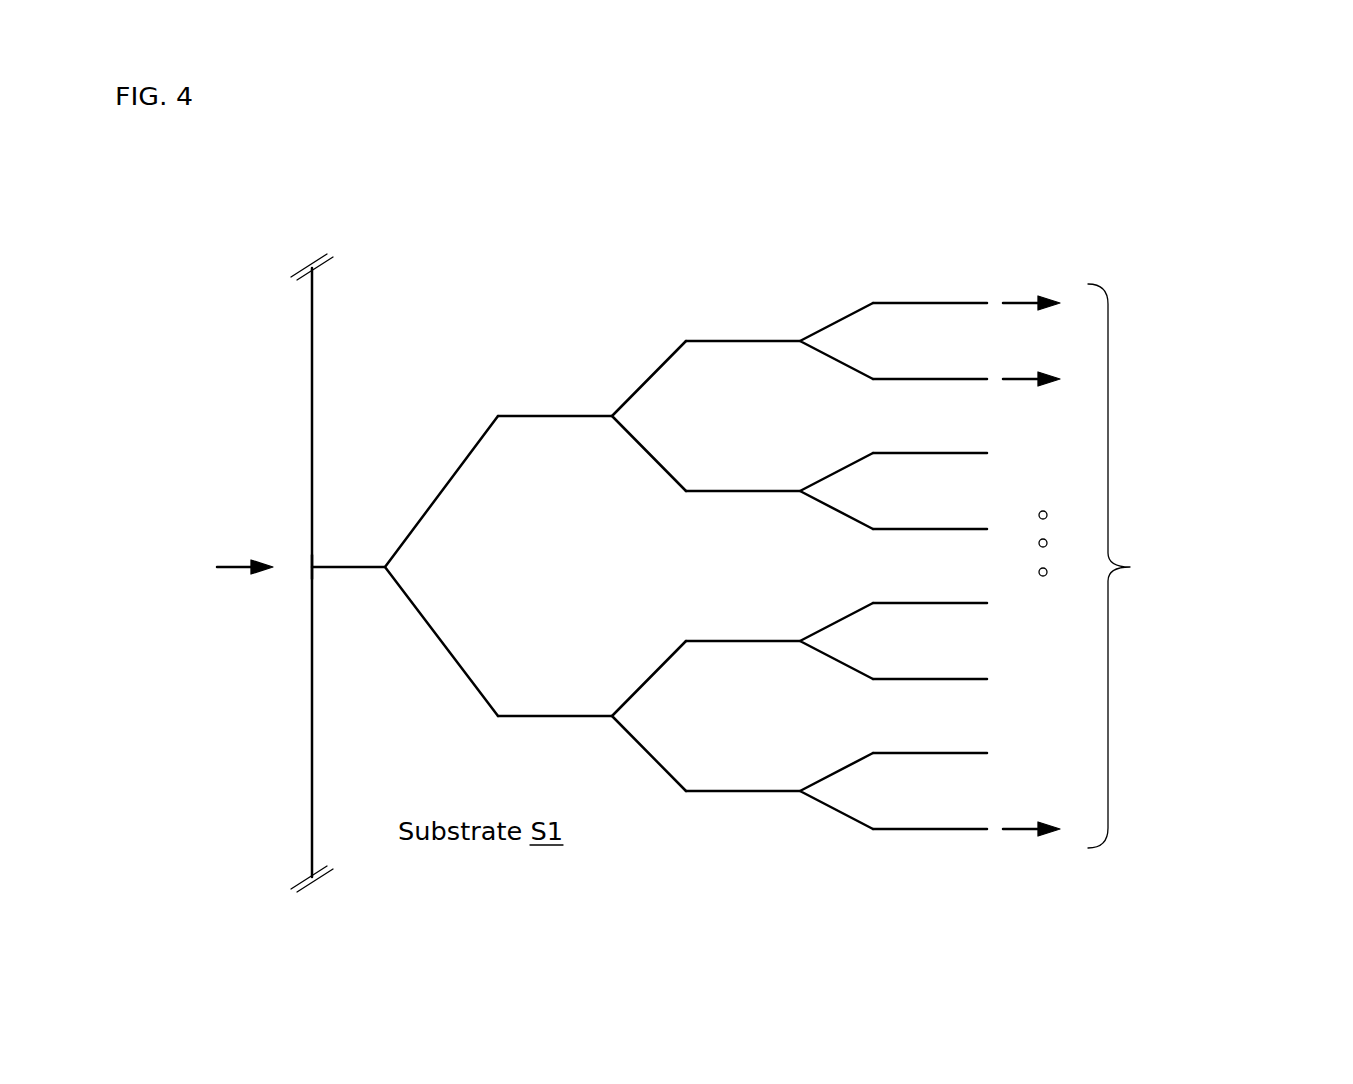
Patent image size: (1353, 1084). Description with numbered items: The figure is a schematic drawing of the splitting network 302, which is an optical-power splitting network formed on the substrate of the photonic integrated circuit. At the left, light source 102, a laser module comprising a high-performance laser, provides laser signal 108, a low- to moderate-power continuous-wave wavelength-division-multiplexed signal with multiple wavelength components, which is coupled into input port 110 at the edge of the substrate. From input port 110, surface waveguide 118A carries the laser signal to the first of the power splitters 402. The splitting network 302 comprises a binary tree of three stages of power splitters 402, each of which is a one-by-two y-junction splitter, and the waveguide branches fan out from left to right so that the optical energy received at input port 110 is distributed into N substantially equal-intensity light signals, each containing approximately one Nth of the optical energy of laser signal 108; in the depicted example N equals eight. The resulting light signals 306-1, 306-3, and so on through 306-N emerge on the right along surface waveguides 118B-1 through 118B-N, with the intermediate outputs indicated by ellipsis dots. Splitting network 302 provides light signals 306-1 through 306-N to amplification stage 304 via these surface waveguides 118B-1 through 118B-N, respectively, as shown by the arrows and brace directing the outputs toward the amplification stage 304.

The splitting network 302 is at (426, 244).
The power splitter 402 is at (376, 588).
The surface waveguide 118A is at (343, 563).
The input port 110 is at (304, 556).
The laser signal 108 is at (227, 570).
The light source 102 is at (162, 566).
The surface waveguide 118B-1 is at (950, 303).
The surface waveguide 118B-N is at (950, 829).
The light signal 306-1 is at (1027, 302).
The light signal 306-3 is at (1027, 380).
The light signal 306-N is at (1027, 831).
The amplification stage 304 is at (1188, 566).